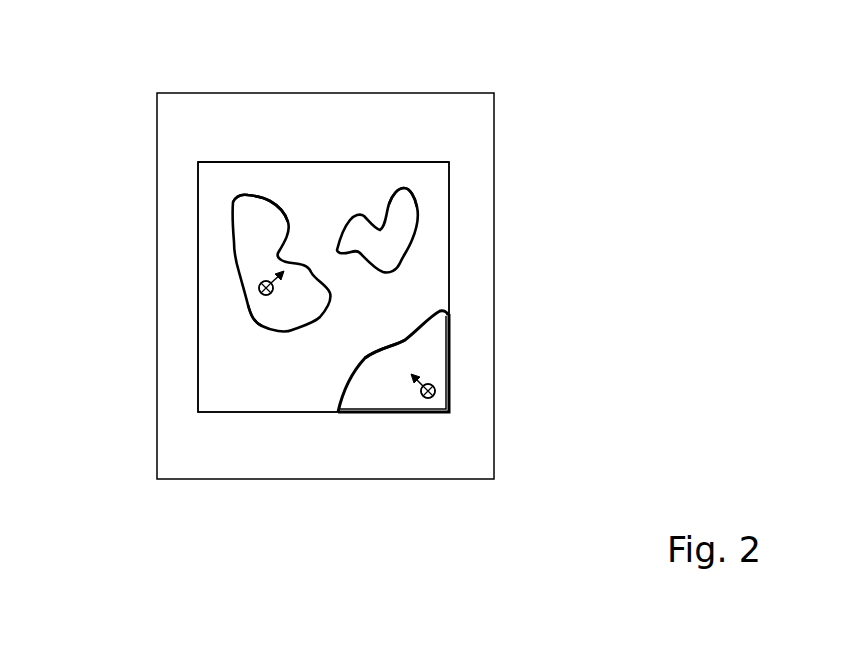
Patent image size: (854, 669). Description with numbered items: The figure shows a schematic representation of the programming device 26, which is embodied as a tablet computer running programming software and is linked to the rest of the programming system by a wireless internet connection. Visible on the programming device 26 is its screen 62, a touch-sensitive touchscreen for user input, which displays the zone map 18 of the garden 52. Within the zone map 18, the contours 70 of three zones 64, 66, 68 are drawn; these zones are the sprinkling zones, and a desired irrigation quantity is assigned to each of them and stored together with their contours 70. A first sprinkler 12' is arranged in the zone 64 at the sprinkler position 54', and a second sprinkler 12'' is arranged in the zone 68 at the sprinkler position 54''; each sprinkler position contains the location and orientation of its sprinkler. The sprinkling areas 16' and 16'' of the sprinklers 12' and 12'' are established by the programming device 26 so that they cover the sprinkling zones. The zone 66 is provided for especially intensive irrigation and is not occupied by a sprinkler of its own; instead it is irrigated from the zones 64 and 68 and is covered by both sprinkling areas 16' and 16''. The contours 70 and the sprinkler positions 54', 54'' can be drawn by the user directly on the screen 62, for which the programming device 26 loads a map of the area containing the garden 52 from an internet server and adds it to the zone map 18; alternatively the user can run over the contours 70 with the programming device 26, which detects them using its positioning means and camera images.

The programming device 26 is at (421, 93).
The garden 52 is at (363, 162).
The zone map 18 is at (363, 162).
The screen 62 is at (250, 162).
The zone 64 is at (247, 225).
The zone 66 is at (402, 233).
The zone 68 is at (395, 396).
The contours 70 is at (417, 193).
The first sprinkler 12' is at (175, 261).
The second sprinkler 12'' is at (510, 420).
The sprinkling area 16' is at (290, 198).
The sprinkling area 16'' is at (378, 329).
The sprinkler position 54' is at (170, 295).
The sprinkler position 54'' is at (515, 398).